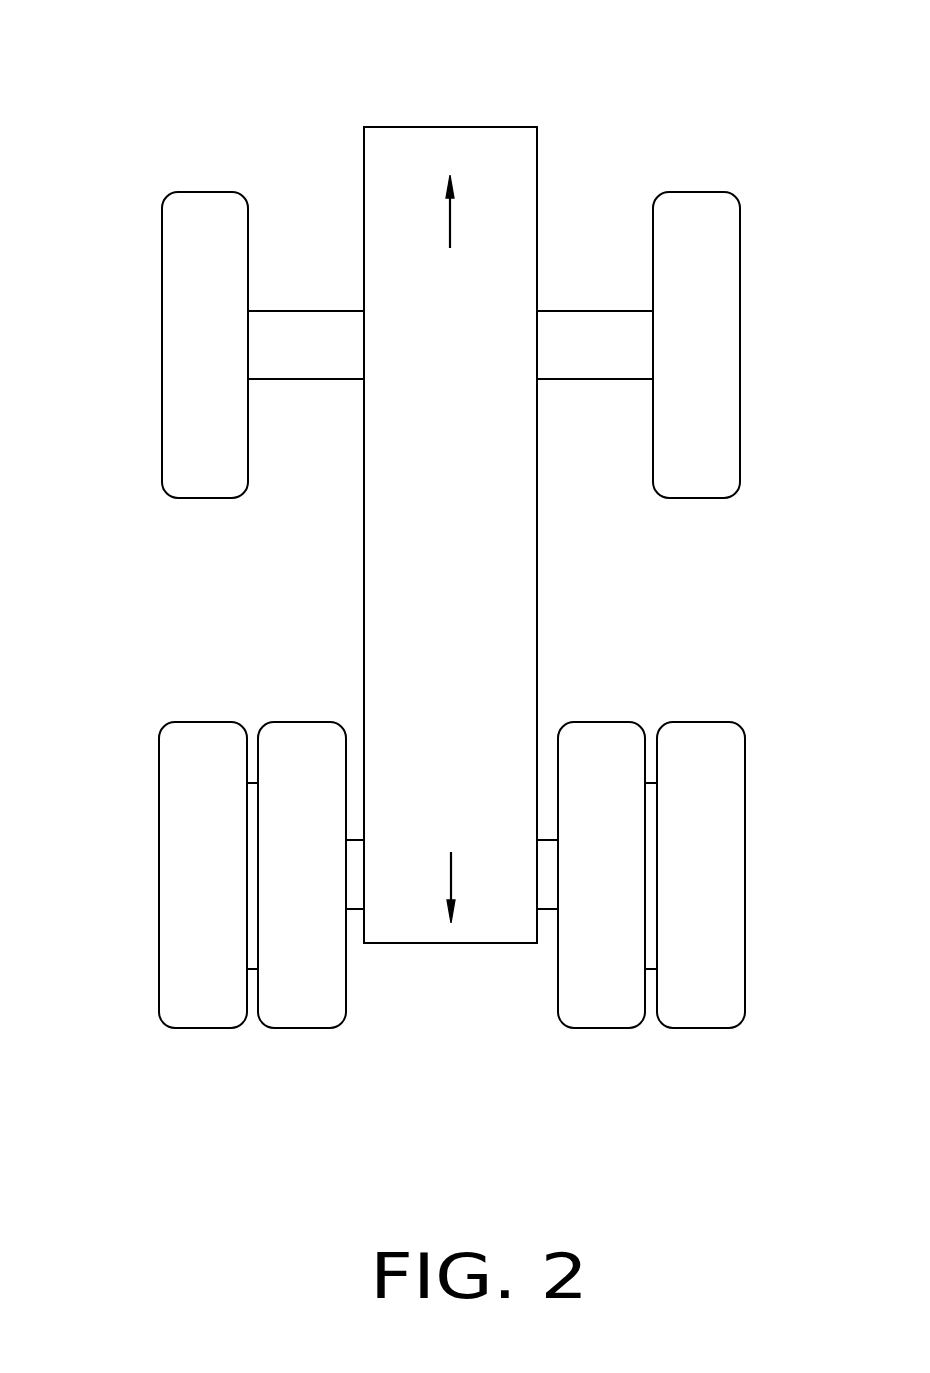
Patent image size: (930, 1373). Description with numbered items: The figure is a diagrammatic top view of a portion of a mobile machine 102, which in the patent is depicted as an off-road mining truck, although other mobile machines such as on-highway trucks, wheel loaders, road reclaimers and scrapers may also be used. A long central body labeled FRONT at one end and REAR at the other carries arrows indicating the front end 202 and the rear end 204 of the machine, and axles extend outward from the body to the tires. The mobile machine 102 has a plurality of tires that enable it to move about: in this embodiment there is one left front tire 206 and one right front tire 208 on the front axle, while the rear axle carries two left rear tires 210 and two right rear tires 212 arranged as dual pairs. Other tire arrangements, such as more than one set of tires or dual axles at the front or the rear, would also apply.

The mobile machine 102 is at (497, 77).
The front end of vehicle 202 is at (436, 127).
The rear end of vehicle 204 is at (452, 943).
The left front tire 206 is at (205, 192).
The right front tire 208 is at (695, 192).
The left rear tires 210 is at (302, 722).
The right rear tires 212 is at (700, 722).